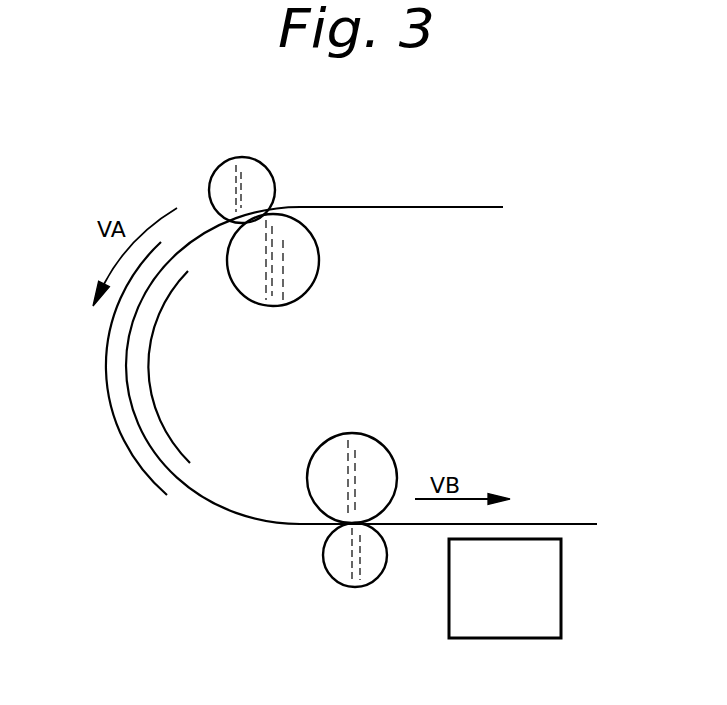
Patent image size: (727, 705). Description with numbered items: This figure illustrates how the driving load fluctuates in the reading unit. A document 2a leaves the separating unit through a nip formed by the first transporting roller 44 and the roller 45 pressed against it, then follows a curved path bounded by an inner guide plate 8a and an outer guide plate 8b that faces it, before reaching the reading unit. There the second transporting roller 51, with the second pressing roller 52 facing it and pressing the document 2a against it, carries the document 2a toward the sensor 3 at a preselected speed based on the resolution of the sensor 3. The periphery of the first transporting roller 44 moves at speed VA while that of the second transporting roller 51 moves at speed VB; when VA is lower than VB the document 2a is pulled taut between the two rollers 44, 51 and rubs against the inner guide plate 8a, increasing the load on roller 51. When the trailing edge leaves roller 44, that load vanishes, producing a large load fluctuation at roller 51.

The document 2a is at (425, 207).
The inner guide plate 8a is at (180, 450).
The outer guide plate 8b is at (157, 488).
The first transporting roller 44 is at (298, 273).
The pinch roller 45 is at (225, 158).
The second transporting roller 51 is at (366, 455).
The second pressing roller 52 is at (340, 565).
The sensor 3 is at (561, 607).